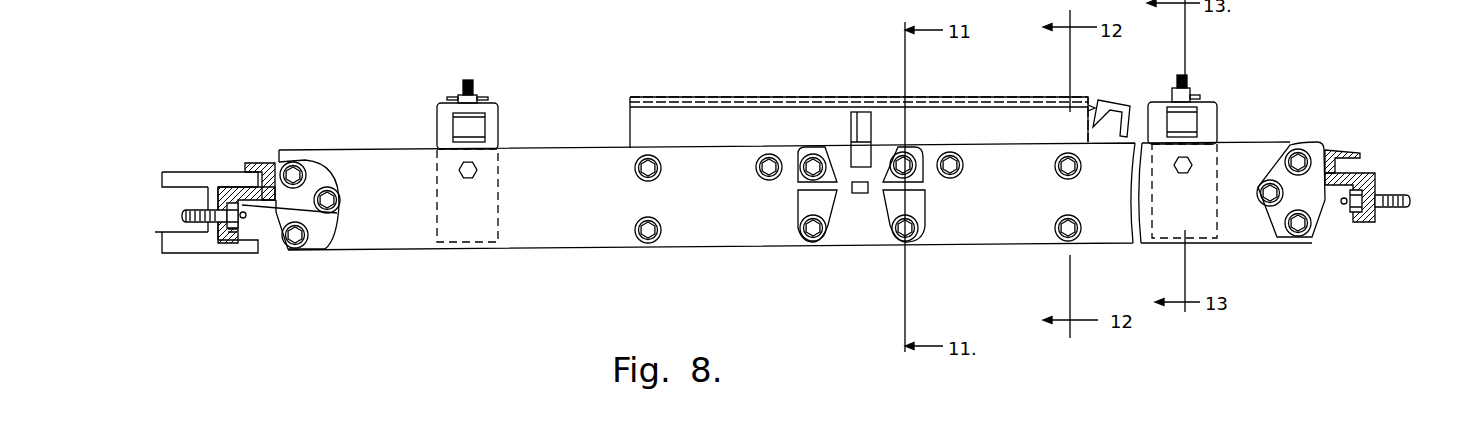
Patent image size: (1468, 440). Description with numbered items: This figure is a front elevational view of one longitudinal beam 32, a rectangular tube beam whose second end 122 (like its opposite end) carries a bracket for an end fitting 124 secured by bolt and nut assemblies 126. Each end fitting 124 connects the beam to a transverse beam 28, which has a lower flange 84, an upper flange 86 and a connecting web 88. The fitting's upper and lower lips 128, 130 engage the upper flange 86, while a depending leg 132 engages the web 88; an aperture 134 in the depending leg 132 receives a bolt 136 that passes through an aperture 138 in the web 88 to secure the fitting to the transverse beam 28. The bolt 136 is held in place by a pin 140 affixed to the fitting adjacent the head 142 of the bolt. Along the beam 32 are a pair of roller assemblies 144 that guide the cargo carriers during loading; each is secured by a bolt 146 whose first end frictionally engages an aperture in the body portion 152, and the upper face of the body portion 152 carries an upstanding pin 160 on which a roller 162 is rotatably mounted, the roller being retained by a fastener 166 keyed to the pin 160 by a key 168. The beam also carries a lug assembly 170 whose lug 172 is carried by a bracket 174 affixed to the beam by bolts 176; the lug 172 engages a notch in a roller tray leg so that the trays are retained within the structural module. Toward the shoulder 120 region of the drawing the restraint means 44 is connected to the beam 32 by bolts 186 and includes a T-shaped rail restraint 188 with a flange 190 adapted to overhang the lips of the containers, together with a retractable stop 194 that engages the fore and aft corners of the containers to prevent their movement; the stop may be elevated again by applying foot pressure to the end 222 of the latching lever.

The transverse beam 28 is at (182, 172).
The longitudinal beam 32 is at (627, 259).
The restraint means 44 is at (720, 89).
The lower flange 84 is at (168, 245).
The upper flange 86 is at (170, 175).
The connecting web 88 is at (205, 234).
The shoulder 120 is at (307, 158).
The second end 122 is at (1278, 237).
The end fitting 124 is at (238, 208).
The bolt and nut assemblies 126 is at (334, 192).
The upper lip 128 is at (252, 163).
The lower lip 130 is at (235, 182).
The depending leg 132 is at (225, 227).
The aperture 134 is at (238, 257).
The bolt 136 is at (246, 205).
The aperture 138 is at (190, 210).
The pin 140 is at (245, 218).
The head 142 is at (232, 233).
The roller assembly 144 is at (495, 129).
The bolt 146 is at (477, 169).
The body portion 152 is at (495, 200).
The upstanding pin 160 is at (472, 82).
The roller 162 is at (457, 129).
The fastener 166 is at (478, 97).
The key 168 is at (452, 97).
The lug assembly 170 is at (924, 219).
The lug 172 is at (862, 194).
The bracket 174 is at (913, 202).
The bolts 176 is at (806, 160).
The bolts 186 is at (760, 176).
The rail restraint 188 is at (630, 100).
The flange 190 is at (1008, 105).
The retractable stop 194 is at (850, 113).
The end 222 is at (1115, 100).